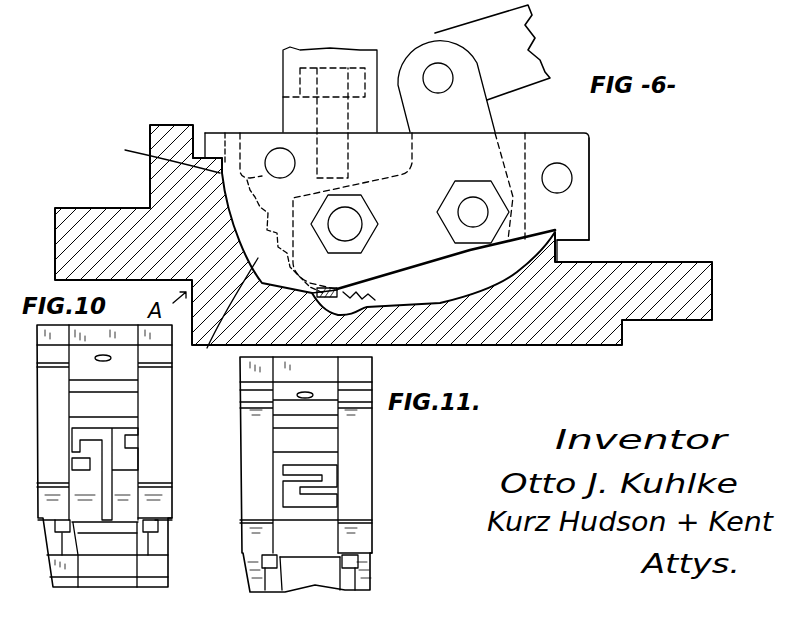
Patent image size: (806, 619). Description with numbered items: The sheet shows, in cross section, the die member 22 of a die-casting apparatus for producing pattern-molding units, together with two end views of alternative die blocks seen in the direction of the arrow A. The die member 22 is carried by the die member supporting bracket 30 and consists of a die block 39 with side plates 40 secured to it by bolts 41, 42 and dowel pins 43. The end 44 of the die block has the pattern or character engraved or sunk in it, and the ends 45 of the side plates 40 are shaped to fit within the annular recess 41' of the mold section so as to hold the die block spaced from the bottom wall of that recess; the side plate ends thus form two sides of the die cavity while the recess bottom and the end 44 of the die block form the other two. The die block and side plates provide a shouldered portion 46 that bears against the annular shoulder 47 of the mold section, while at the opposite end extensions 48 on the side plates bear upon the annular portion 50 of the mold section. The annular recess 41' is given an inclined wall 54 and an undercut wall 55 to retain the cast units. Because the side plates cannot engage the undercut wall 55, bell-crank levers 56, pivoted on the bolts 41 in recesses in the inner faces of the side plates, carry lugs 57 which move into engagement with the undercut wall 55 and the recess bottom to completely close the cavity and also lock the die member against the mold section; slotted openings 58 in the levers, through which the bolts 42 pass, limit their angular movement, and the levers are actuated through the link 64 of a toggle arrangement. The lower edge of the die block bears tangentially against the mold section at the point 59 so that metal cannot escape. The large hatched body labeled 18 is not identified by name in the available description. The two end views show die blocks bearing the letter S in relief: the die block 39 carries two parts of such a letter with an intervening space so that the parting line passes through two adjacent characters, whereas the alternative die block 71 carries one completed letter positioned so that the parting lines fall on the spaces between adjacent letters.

In FIG. 6, the base block 18 is at (78, 210).
In FIG. 6, the die member 22 is at (583, 160).
In FIG. 6, the die member supporting bracket 30 is at (285, 55).
In FIG. 10, the die block 39 is at (72, 455).
In FIG. 6, the side plates 40 is at (547, 135).
In FIG. 10, the side plates 40 is at (37, 408).
In FIG. 11, the side plates 40 is at (240, 462).
In FIG. 6, the bolts 41 is at (454, 212).
In FIG. 6, the annular recess 41' is at (216, 367).
In FIG. 6, the bolts 42 is at (362, 215).
In FIG. 6, the dowel pins 43 is at (283, 152).
In FIG. 6, the end of the die block 44 is at (274, 213).
In FIG. 6, the ends of the side plates 45 is at (257, 260).
In FIG. 6, the shouldered portion 46 is at (587, 238).
In FIG. 6, the annular shoulder 47 is at (547, 253).
In FIG. 6, the extensions 48 is at (198, 135).
In FIG. 6, the annular portion 50 is at (197, 156).
In FIG. 6, the inclined wall 54 is at (447, 70).
In FIG. 6, the undercut wall 55 is at (343, 292).
In FIG. 6, the bell-crank levers 56 is at (482, 118).
In FIG. 6, the lugs 57 is at (243, 147).
In FIG. 10, the lugs 57 is at (148, 523).
In FIG. 11, the lugs 57 is at (352, 560).
In FIG. 6, the slotted openings 58 is at (363, 240).
In FIG. 6, the point 59 is at (333, 288).
In FIG. 6, the link 64 is at (547, 53).
In FIG. 11, the die block 71 is at (330, 460).